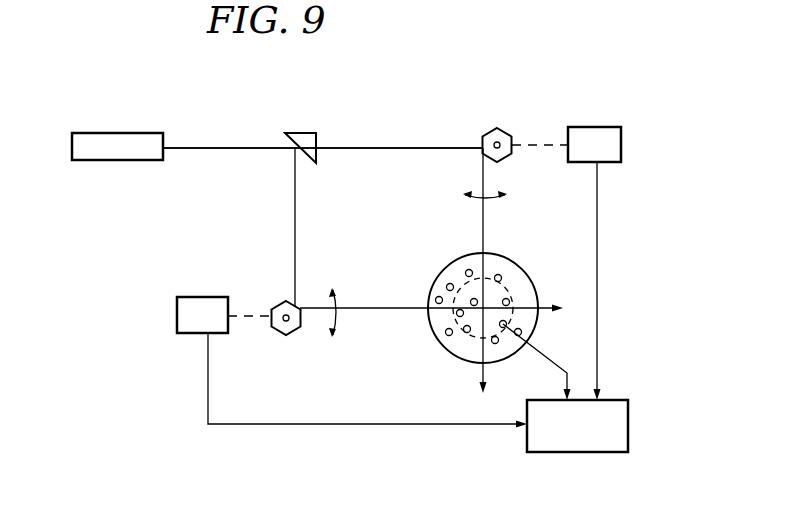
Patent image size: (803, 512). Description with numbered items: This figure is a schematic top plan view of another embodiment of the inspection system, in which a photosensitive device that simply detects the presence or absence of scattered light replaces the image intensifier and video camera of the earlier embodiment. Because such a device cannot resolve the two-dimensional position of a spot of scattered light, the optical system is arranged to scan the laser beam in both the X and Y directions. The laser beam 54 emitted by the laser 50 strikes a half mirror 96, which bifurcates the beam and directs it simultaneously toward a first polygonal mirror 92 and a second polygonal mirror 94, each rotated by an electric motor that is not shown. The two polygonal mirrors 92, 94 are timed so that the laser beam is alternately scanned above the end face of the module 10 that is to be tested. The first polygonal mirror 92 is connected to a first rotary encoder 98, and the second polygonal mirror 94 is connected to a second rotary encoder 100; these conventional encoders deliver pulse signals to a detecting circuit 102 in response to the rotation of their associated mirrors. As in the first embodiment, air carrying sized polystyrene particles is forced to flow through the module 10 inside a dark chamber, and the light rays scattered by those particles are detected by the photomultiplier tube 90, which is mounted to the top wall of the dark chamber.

The laser 50 is at (112, 160).
The laser beam 54 is at (241, 146).
The half mirror 96 is at (310, 133).
The second polygonal mirror 94 is at (497, 129).
The second rotary encoder 100 is at (590, 127).
The module 10 is at (489, 300).
The photomultiplier tube 90 is at (472, 338).
The first polygonal mirror 92 is at (292, 336).
The first rotary encoder 98 is at (177, 315).
The detecting circuit 102 is at (630, 425).